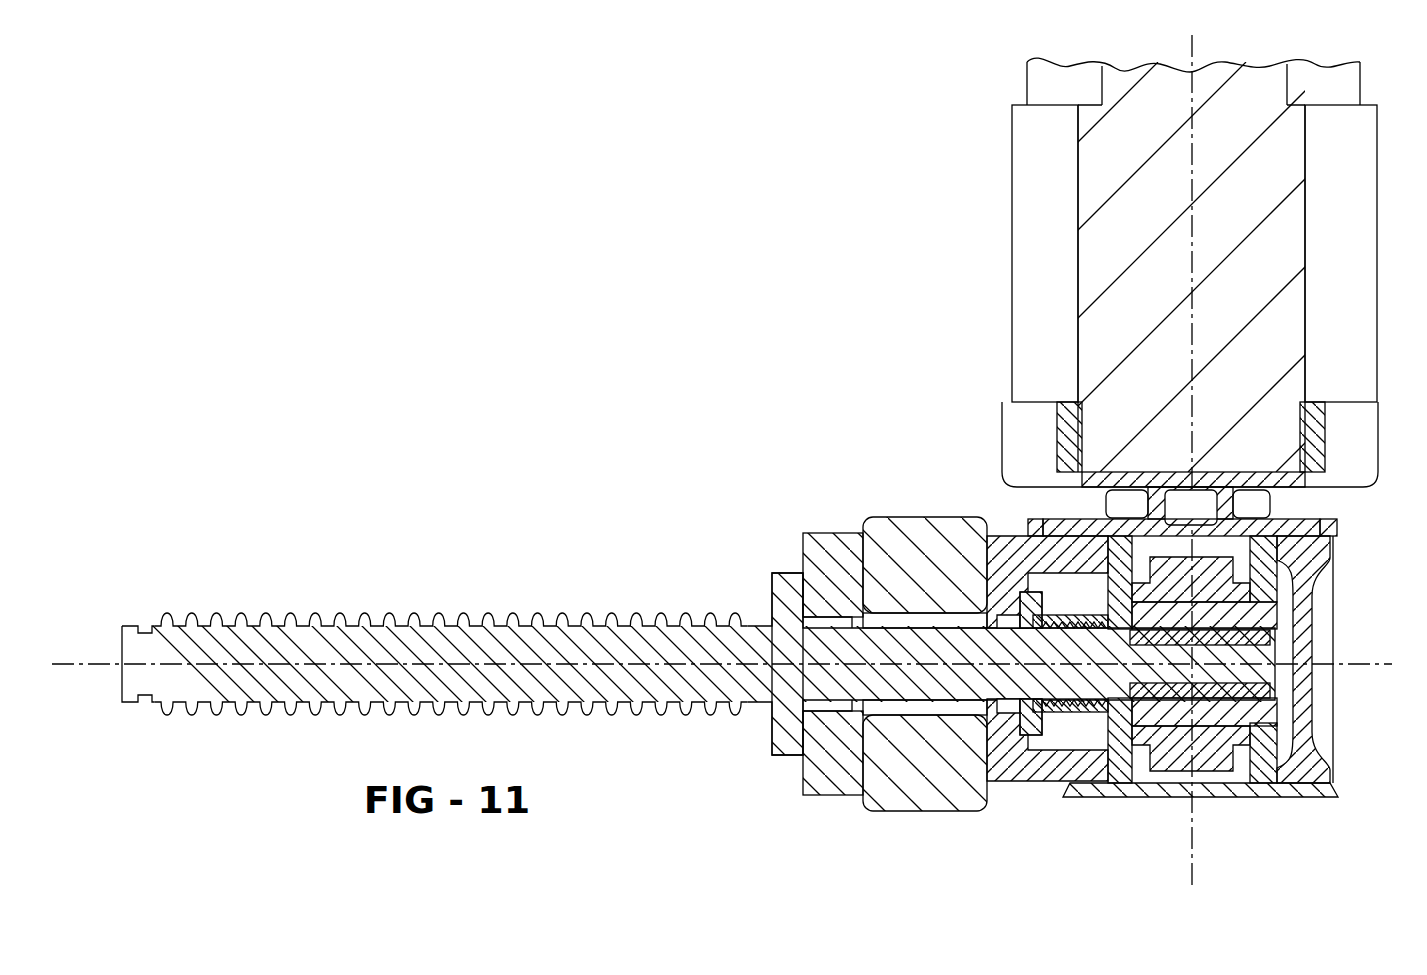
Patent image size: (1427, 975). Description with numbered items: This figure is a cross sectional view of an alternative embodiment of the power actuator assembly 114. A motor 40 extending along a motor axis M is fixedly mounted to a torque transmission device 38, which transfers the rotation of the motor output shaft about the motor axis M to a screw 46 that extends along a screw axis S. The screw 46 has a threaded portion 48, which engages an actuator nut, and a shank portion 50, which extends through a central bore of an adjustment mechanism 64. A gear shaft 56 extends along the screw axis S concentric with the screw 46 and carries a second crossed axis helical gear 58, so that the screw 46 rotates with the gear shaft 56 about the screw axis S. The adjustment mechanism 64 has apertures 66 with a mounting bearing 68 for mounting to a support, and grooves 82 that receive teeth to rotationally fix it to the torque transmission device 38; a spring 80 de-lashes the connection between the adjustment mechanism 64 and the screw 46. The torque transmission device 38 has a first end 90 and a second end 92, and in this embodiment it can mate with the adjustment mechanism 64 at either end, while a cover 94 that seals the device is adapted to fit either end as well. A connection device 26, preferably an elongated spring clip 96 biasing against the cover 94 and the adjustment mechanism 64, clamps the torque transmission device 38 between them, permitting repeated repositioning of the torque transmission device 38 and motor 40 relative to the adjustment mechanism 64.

The connection device 26 is at (1075, 802).
The torque transmission device 38 is at (1100, 800).
The motor 40 is at (1365, 87).
The screw 46 is at (323, 612).
The threaded portion 48 is at (386, 612).
The shank portion 50 is at (897, 608).
The gear shaft 56 is at (1257, 612).
The second crossed axis helical gear 58 is at (1345, 522).
The adjustment mechanism 64 is at (812, 797).
The aperture 66 is at (870, 530).
The mounting bearing 68 is at (915, 517).
The spring 80 is at (1062, 455).
The groove 82 is at (1100, 478).
The first end 90 is at (1030, 527).
The second end 92 is at (1328, 533).
The cover 94 is at (1318, 655).
The elongated spring clip 96 is at (1270, 800).
The actuator assembly 114 is at (962, 61).
The screw axis S is at (64, 664).
The motor axis M is at (1195, 875).